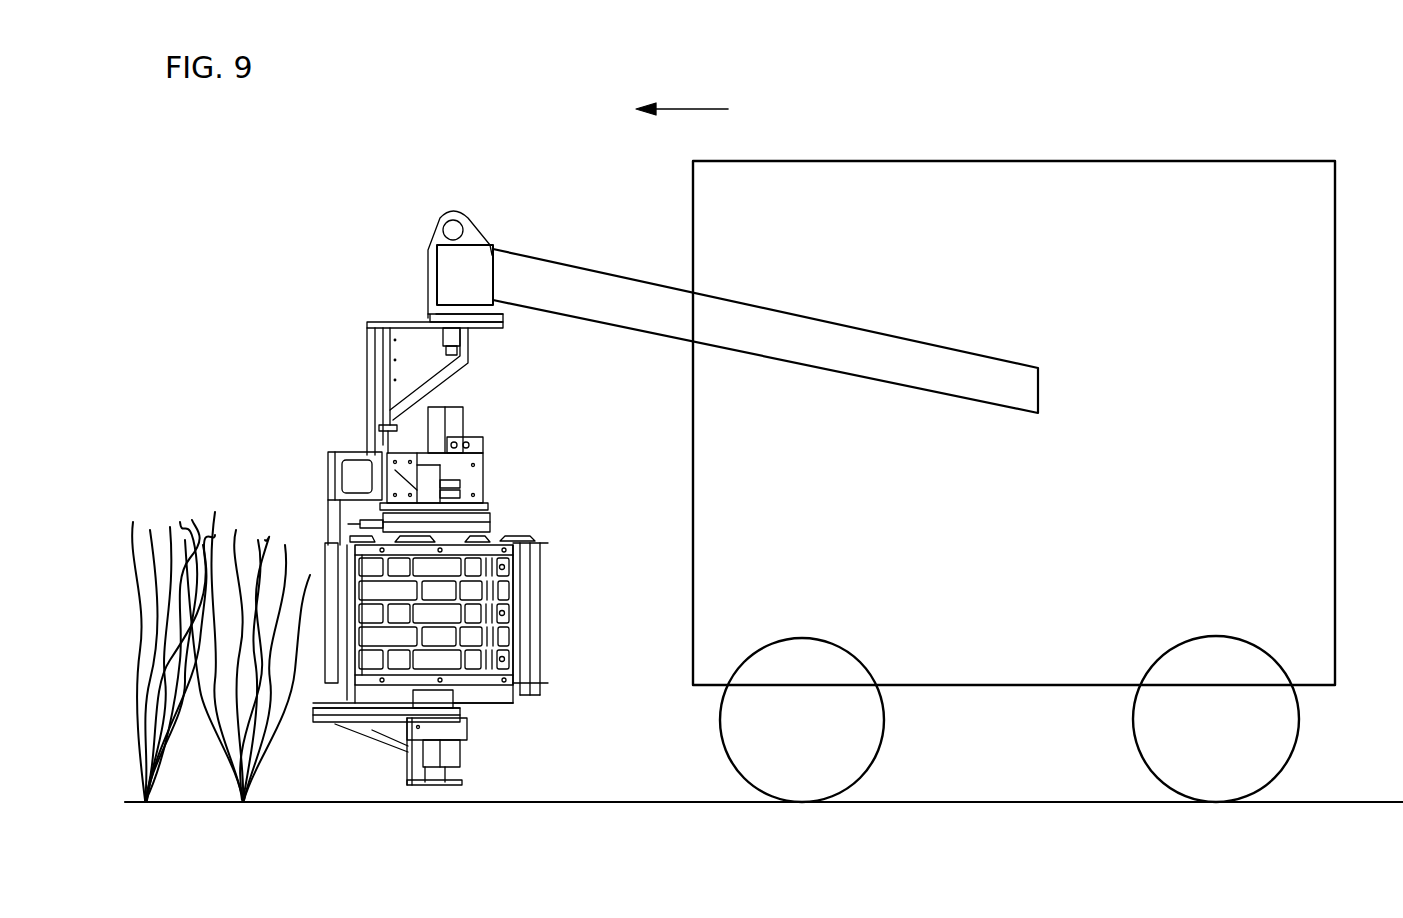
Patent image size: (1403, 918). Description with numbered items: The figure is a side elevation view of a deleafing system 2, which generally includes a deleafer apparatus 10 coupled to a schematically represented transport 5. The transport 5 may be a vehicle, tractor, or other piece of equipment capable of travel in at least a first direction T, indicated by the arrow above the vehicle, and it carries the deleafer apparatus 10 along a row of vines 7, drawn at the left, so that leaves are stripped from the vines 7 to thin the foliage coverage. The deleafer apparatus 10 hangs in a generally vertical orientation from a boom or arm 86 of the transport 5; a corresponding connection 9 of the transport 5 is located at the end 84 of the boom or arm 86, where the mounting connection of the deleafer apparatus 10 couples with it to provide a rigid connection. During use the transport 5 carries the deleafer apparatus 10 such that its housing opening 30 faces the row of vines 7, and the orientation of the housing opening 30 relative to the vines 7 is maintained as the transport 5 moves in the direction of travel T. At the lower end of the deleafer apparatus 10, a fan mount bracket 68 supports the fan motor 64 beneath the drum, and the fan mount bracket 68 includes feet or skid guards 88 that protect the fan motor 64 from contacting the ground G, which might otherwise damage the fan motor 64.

The deleafing system 2 is at (559, 181).
The transport 5 is at (937, 160).
The vines 7 is at (184, 504).
The corresponding connection 9 is at (410, 280).
The deleafer apparatus 10 is at (338, 262).
The housing opening 30 is at (512, 588).
The fan motor 64 is at (455, 746).
The fan mount bracket 68 is at (376, 737).
The end of boom 84 is at (437, 263).
The boom or arm 86 is at (612, 284).
The skid guards 88 is at (453, 783).
The ground G is at (298, 800).
The first direction T is at (682, 97).